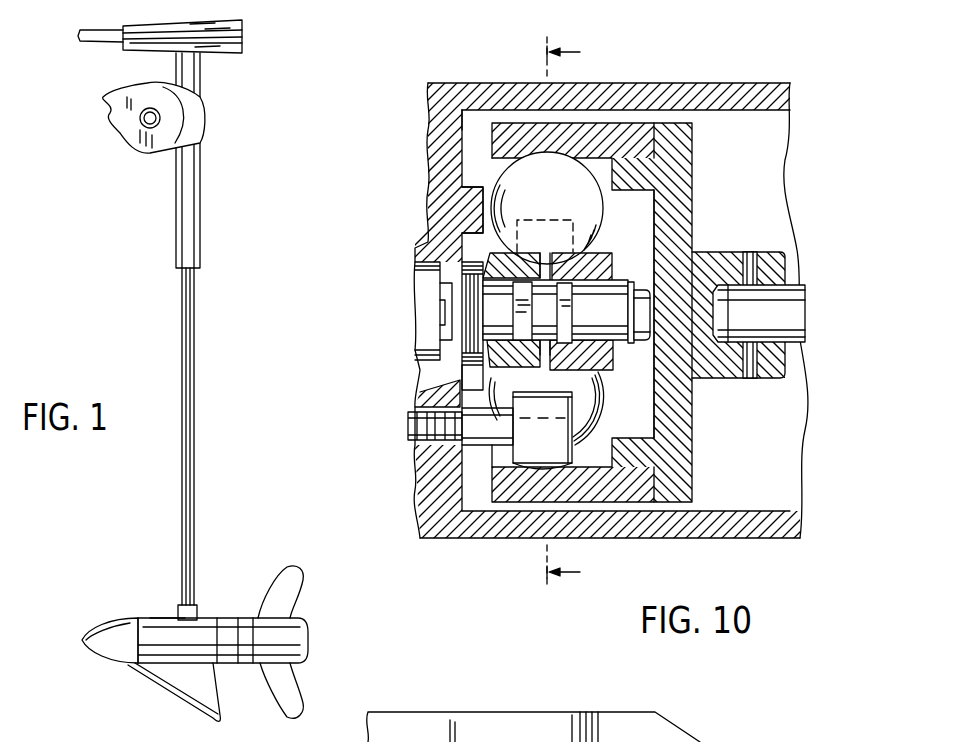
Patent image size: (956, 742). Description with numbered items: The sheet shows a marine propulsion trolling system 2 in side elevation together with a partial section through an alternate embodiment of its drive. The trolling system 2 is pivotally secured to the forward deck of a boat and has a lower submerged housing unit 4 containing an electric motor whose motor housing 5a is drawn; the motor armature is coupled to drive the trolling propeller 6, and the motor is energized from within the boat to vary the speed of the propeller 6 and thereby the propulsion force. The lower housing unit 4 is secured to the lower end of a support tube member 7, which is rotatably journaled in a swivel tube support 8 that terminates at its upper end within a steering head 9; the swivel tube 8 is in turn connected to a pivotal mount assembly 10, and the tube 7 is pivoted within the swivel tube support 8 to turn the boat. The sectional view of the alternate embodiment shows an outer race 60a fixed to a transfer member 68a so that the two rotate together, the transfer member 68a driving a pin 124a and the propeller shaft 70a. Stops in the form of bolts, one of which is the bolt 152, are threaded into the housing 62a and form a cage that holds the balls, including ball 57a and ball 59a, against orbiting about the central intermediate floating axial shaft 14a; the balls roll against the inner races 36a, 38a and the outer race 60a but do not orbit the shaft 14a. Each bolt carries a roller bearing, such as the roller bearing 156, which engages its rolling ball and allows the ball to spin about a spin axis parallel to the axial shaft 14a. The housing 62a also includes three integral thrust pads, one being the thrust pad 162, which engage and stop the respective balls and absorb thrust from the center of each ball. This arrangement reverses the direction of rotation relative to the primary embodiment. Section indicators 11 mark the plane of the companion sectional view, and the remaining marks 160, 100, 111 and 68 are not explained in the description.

In FIG. 1, the marine propulsion trolling system 2 is at (206, 165).
In FIG. 1, the lower submerged housing unit 4 is at (92, 598).
In FIG. 1, the motor housing 5a is at (156, 616).
In FIG. 1, the trolling propeller 6 is at (284, 574).
In FIG. 1, the support tube member 7 is at (188, 328).
In FIG. 1, the swivel tube support 8 is at (182, 230).
In FIG. 1, the steering head 9 is at (240, 27).
In FIG. 1, the pivotal mount assembly 10 is at (130, 143).
In FIG. 10, the section line 11- 11 is at (579, 311).
In FIG. 10, the central intermediate floating axial shaft 14a is at (608, 300).
In FIG. 10, the inner race 36a is at (497, 367).
In FIG. 10, the inner race 38a is at (596, 358).
In FIG. 10, the ball 57a is at (576, 195).
In FIG. 10, the ball 59a is at (580, 385).
In FIG. 10, the outer race 60a is at (622, 127).
In FIG. 10, the housing 62a is at (472, 83).
In FIG. 10, the transfer member 68a is at (692, 160).
In FIG. 10, the propeller shaft 70a is at (800, 306).
In FIG. 10, the pin 124a is at (755, 252).
In FIG. 10, the bolt 152 is at (473, 430).
In FIG. 10, the roller bearing 156 is at (576, 425).
In FIG. 10, the housing corner 160 is at (462, 120).
In FIG. 10, the thrust pad 162 is at (462, 205).
In FIG. 10, the housing (partial figure) 100 is at (405, 741).
In FIG. 10, the fastener (partial figure) 111 is at (583, 740).
In FIG. 10, the housing wall (partial figure) 68 is at (678, 731).